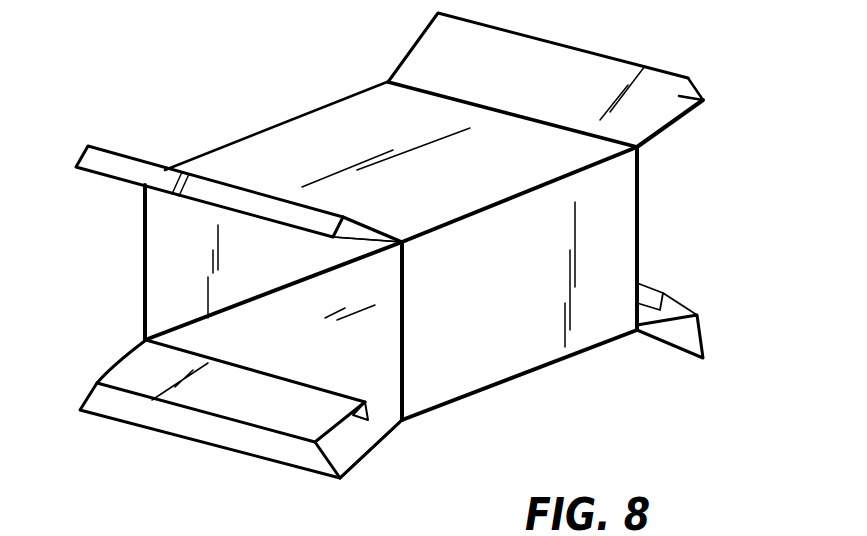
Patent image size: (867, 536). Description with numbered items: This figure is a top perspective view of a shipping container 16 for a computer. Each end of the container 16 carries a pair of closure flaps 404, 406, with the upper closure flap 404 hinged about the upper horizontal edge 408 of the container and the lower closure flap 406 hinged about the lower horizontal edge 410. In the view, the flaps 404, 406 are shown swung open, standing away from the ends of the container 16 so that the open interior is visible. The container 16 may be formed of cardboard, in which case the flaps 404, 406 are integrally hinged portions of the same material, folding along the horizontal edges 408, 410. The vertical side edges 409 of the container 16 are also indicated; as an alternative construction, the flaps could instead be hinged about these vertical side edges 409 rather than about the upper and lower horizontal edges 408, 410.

The container 16 is at (514, 378).
The closure flap 404 is at (543, 42).
The closure flap 406 is at (305, 476).
The upper horizontal edge 408 is at (372, 245).
The vertical side edge 409 is at (145, 250).
The lower horizontal edge 410 is at (386, 419).